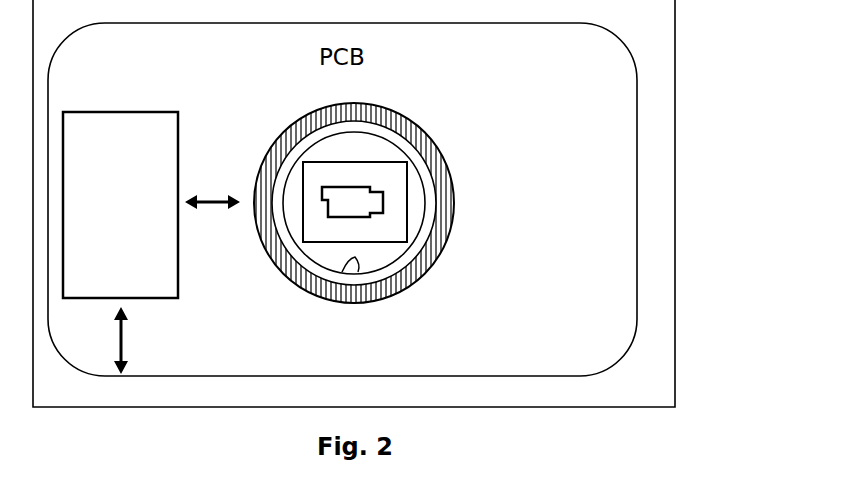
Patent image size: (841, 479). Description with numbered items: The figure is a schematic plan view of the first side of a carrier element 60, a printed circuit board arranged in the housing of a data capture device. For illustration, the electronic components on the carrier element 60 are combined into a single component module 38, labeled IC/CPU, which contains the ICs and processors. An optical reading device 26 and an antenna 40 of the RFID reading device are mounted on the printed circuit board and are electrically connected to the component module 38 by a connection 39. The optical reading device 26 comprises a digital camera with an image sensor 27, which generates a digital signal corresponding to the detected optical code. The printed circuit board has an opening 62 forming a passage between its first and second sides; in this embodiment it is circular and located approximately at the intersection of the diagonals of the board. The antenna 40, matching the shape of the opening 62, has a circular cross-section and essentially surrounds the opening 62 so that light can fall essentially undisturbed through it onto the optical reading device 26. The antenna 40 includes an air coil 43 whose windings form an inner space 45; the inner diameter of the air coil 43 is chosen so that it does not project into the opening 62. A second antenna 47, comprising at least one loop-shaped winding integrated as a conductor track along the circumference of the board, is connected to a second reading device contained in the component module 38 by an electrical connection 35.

The carrier element 60 is at (675, 117).
The second antenna 47 is at (637, 258).
The component module 38 is at (175, 132).
The connection 39 is at (212, 198).
The electrical connection 35 is at (124, 343).
The antenna 40 is at (438, 142).
The air coil 43 is at (440, 175).
The inner space 45 is at (368, 157).
The optical reading device 26 is at (382, 230).
The image sensor 27 is at (381, 202).
The opening 62 is at (356, 268).